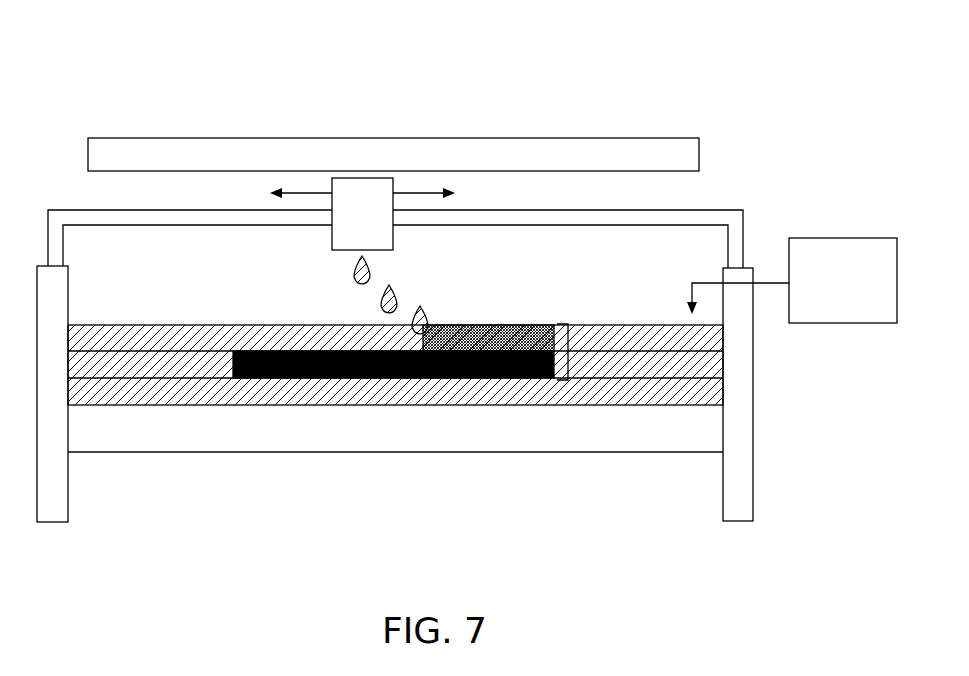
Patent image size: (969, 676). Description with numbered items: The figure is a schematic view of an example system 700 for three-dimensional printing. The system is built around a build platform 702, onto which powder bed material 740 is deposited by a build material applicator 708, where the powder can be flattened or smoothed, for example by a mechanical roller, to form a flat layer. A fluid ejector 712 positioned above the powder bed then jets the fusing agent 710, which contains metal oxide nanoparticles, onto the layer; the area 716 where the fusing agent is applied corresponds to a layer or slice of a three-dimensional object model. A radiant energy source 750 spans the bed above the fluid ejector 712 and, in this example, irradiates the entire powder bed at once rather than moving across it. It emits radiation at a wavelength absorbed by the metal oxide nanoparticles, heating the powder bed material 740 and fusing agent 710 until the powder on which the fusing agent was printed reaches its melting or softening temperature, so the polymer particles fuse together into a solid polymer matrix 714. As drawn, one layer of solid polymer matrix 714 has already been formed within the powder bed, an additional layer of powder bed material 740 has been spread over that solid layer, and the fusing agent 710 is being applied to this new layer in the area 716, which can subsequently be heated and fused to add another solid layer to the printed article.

The system for three-dimensional printing 700 is at (136, 57).
The build platform 702 is at (561, 435).
The build material applicator 708 is at (794, 280).
The fusing agent 710 is at (352, 271).
The fluid ejector 712 is at (362, 214).
The solid polymer matrix 714 is at (357, 380).
The area where the fusing agent is applied 716 is at (463, 380).
The powder bed material 740 is at (136, 358).
The radiant energy source 750 is at (393, 154).